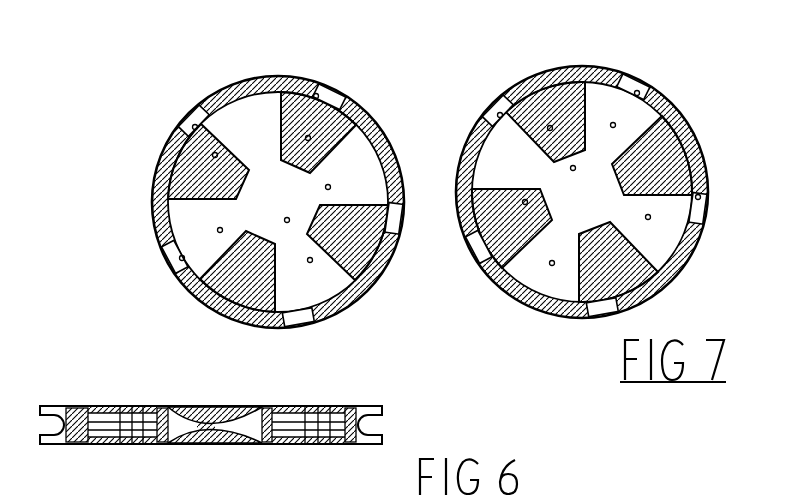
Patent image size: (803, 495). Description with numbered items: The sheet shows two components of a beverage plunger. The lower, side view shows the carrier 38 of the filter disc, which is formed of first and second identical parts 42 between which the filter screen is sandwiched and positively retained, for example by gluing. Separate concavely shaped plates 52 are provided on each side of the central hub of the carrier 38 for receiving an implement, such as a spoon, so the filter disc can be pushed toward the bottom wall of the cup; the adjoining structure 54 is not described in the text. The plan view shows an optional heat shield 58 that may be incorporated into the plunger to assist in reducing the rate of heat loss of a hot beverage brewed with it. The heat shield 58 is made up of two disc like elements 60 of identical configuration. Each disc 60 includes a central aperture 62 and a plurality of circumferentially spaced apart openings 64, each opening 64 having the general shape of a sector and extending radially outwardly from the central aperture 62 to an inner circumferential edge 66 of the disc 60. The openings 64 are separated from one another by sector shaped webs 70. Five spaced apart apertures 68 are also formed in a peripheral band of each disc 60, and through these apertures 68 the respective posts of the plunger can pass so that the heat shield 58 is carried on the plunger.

In FIG. 6, the carrier 38 is at (75, 375).
In FIG. 6, the first and second identical parts 42 is at (381, 443).
In FIG. 6, the concavely shaped plates 52 is at (207, 422).
In FIG. 6, the rail plate 54 is at (204, 450).
In FIG. 7, the heat shield 58 is at (433, 243).
In FIG. 6, the disc like elements 60 is at (297, 77).
In FIG. 7, the disc like elements 60 is at (707, 147).
In FIG. 6, the central aperture 62 is at (287, 220).
In FIG. 7, the central aperture 62 is at (573, 168).
In FIG. 6, the openings 64 is at (220, 230).
In FIG. 7, the openings 64 is at (613, 125).
In FIG. 6, the inner circumferential edge 66 is at (190, 280).
In FIG. 6, the apertures 68 is at (313, 97).
In FIG. 7, the apertures 68 is at (500, 115).
In FIG. 6, the sector shaped webs 70 is at (223, 150).
In FIG. 7, the sector shaped webs 70 is at (580, 243).